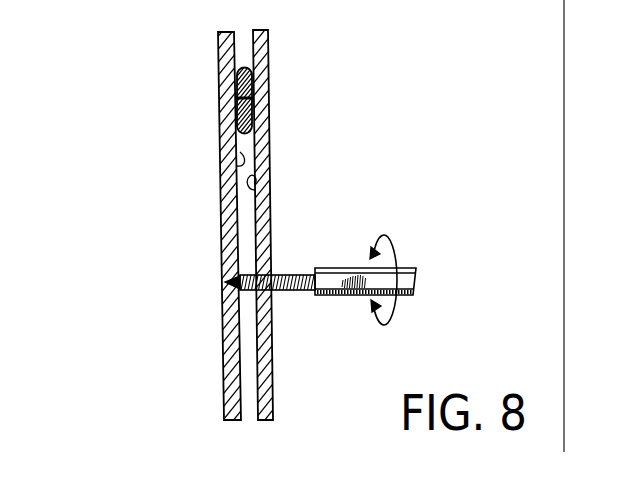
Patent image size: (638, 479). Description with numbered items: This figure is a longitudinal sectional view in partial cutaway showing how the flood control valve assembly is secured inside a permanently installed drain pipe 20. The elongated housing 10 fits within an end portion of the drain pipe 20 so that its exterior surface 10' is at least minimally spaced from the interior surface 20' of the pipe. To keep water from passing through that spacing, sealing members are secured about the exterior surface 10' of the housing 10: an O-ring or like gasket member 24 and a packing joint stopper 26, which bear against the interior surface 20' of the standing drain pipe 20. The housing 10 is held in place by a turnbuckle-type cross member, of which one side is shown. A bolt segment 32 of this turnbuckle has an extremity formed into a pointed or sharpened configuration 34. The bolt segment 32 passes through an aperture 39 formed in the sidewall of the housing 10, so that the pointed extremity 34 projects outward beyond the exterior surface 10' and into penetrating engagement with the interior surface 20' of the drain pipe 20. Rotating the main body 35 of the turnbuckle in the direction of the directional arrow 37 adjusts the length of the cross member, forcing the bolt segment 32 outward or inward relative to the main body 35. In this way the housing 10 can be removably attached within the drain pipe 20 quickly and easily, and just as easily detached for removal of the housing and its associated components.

The housing 10 is at (298, 239).
The exterior surface of the housing 10' is at (290, 189).
The drain pipe 20 is at (184, 239).
The interior surface of the drain pipe 20' is at (209, 141).
The O-ring 24 is at (252, 74).
The packing joint stopper 26 is at (253, 110).
The bolt segment 32 is at (282, 275).
The pointed extremity 34 is at (226, 282).
The main body 35 is at (416, 290).
The directional arrow 37 is at (381, 238).
The aperture 39 is at (272, 290).